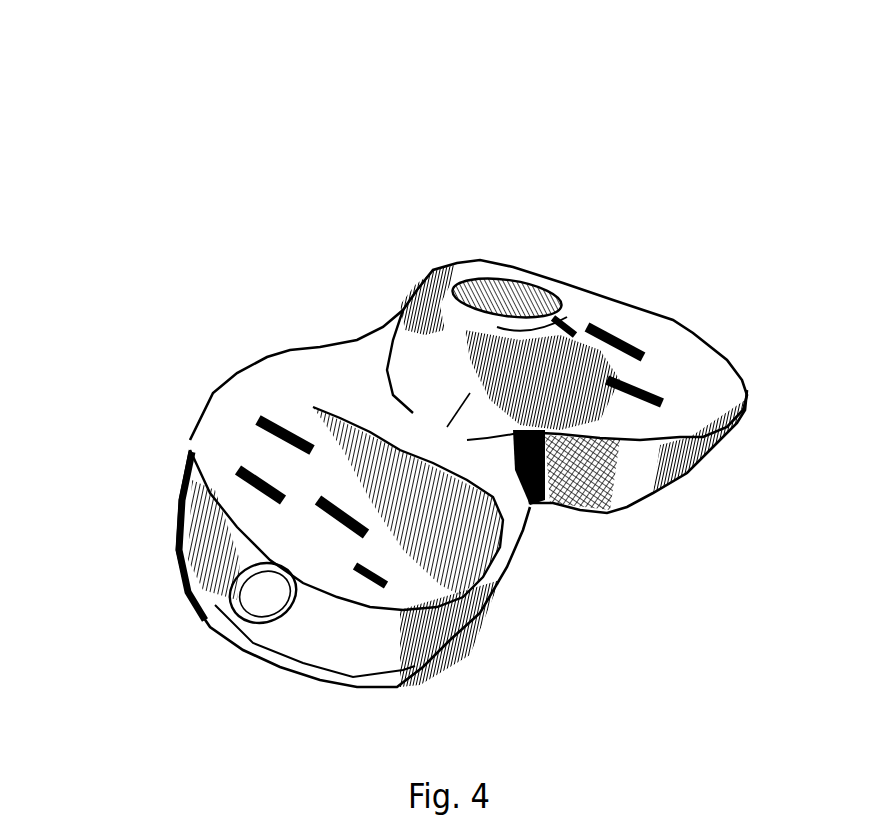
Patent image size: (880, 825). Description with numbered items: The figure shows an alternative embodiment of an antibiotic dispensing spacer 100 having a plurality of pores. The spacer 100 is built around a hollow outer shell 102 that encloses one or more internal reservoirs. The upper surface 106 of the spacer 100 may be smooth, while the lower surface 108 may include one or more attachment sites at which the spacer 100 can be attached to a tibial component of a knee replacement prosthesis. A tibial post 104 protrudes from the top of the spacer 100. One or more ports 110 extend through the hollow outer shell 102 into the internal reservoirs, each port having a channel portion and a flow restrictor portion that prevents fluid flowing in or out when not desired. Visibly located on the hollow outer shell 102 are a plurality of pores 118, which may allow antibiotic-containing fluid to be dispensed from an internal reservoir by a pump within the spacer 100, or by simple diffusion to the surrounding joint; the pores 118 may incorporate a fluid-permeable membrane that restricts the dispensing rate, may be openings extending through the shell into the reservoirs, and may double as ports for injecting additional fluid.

The antibiotic dispensing spacer 100 is at (413, 347).
The hollow outer shell 102 is at (283, 337).
The tibial post 104 is at (488, 280).
The upper surface 106 is at (213, 433).
The lower surface 108 is at (580, 513).
The ports 110 is at (260, 593).
The pores 118 is at (613, 333).